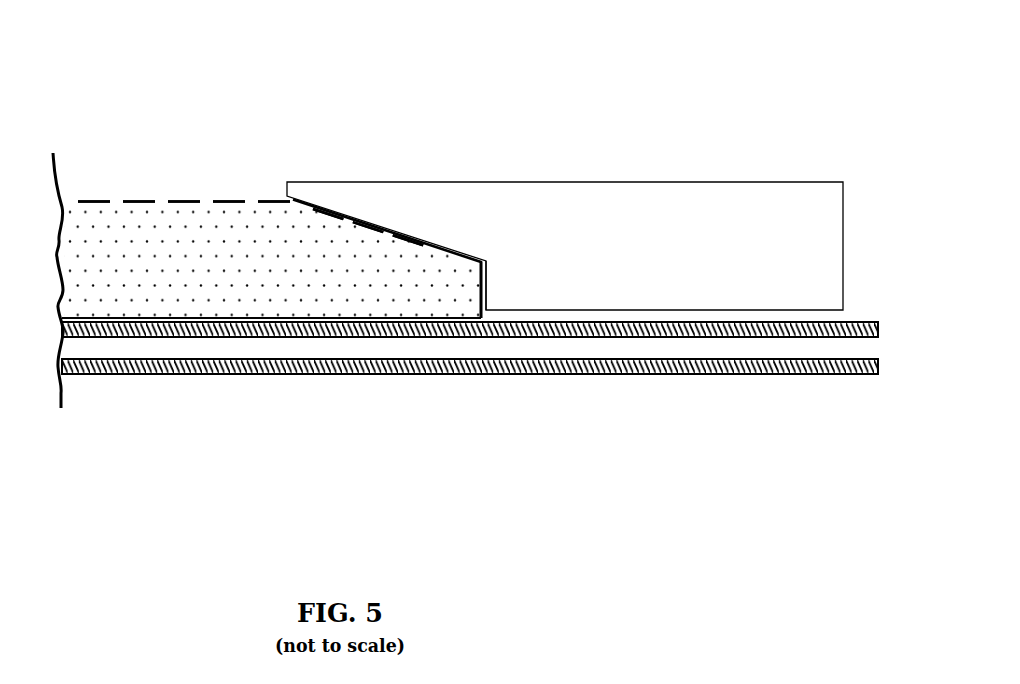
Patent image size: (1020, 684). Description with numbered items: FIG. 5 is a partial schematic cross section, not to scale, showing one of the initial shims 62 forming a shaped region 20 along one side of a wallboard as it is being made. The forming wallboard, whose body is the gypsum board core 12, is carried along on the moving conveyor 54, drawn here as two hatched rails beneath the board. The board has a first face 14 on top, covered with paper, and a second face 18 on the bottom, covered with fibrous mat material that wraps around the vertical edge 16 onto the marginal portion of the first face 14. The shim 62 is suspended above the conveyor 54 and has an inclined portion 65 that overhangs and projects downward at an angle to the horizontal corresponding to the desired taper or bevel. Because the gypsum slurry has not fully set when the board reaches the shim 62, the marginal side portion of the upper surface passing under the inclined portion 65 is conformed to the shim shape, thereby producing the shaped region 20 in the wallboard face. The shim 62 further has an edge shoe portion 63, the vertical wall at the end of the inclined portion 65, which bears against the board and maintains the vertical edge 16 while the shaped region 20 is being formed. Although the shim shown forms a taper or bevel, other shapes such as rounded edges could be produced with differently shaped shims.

The gypsum board core 12 is at (240, 250).
The first face 14 is at (106, 202).
The edge 16 is at (427, 370).
The second face 18 is at (271, 377).
The shaped region 20 is at (350, 240).
The conveyor 54 is at (517, 341).
The shim 62 is at (630, 181).
The edge shoe portion 63 is at (489, 284).
The inclined portion 65 is at (395, 224).